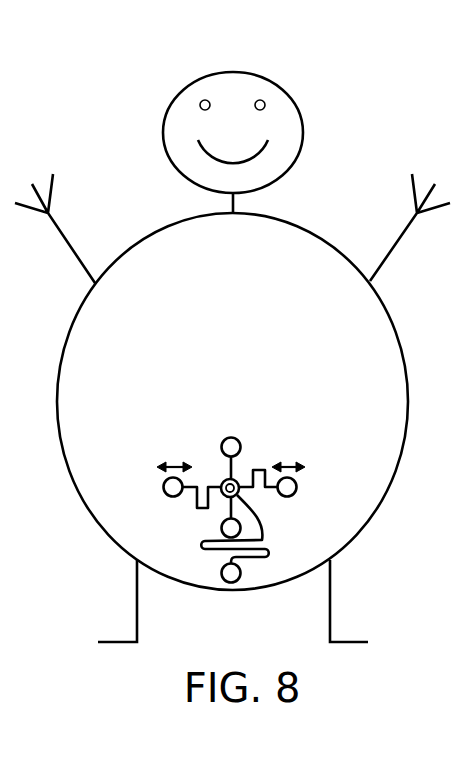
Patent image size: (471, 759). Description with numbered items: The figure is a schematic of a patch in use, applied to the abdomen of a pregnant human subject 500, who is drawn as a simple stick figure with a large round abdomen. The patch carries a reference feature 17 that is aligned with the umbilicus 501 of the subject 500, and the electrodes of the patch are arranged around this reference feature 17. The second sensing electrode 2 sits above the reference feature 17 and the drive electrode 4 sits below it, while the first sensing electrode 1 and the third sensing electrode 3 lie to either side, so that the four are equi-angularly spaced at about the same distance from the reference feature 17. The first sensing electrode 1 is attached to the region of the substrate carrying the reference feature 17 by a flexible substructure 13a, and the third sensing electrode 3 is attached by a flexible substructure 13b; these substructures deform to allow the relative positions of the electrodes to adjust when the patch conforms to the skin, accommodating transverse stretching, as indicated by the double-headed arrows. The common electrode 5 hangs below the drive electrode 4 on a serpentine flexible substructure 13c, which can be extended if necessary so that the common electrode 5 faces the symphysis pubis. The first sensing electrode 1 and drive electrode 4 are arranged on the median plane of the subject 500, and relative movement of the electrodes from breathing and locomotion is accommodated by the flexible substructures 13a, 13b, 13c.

The subject 500 is at (162, 62).
The umbilicus 501 is at (222, 483).
The reference feature 17 is at (228, 480).
The second sensing electrode 2 is at (233, 437).
The third sensing electrode 3 is at (163, 489).
The first sensing electrode 1 is at (297, 489).
The drive electrode 4 is at (221, 529).
The common electrode 5 is at (231, 583).
The flexible substructure 13a is at (254, 468).
The flexible substructure 13b is at (199, 505).
The flexible substructure 13c is at (265, 545).